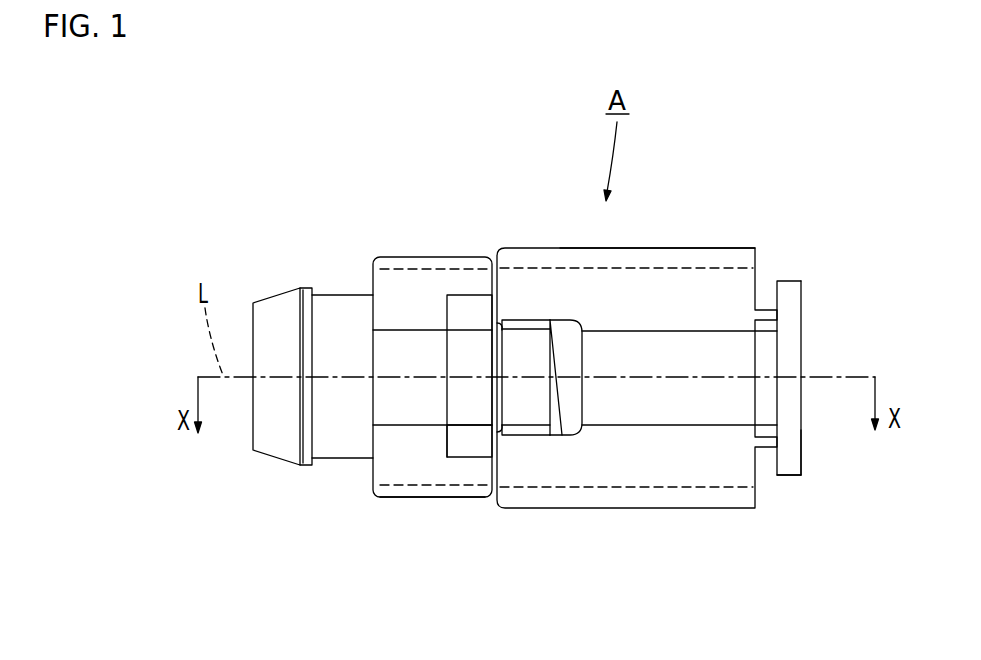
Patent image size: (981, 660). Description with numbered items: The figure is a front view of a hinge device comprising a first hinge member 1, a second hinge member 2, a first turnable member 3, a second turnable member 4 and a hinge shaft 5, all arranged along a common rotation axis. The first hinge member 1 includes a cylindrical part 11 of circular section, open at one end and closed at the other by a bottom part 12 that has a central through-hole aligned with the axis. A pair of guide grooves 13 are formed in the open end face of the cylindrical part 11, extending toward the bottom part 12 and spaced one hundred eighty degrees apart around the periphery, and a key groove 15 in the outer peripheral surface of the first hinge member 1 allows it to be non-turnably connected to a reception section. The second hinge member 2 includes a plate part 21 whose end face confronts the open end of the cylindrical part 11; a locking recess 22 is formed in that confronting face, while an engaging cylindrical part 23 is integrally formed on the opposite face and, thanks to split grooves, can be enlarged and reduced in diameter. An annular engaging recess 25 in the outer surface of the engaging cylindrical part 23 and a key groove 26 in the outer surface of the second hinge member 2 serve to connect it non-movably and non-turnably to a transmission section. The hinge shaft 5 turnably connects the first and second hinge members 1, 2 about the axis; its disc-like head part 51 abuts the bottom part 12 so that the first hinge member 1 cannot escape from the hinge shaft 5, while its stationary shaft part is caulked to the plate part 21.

The first hinge member 1 is at (680, 248).
The cylindrical part 11 is at (722, 250).
The bottom part 12 is at (776, 328).
The guide grooves 13 is at (532, 324).
The key groove 15 is at (655, 268).
The second hinge member 2 is at (393, 255).
The plate part 21 is at (393, 497).
The locking recess 22 is at (455, 311).
The engaging cylindrical part 23 is at (305, 467).
The annular engaging recess 25 is at (333, 438).
The key groove 26 is at (478, 257).
The first turnable member 3 is at (533, 410).
The second turnable member 4 is at (472, 410).
The hinge shaft 5 is at (803, 440).
The head part 51 is at (802, 405).